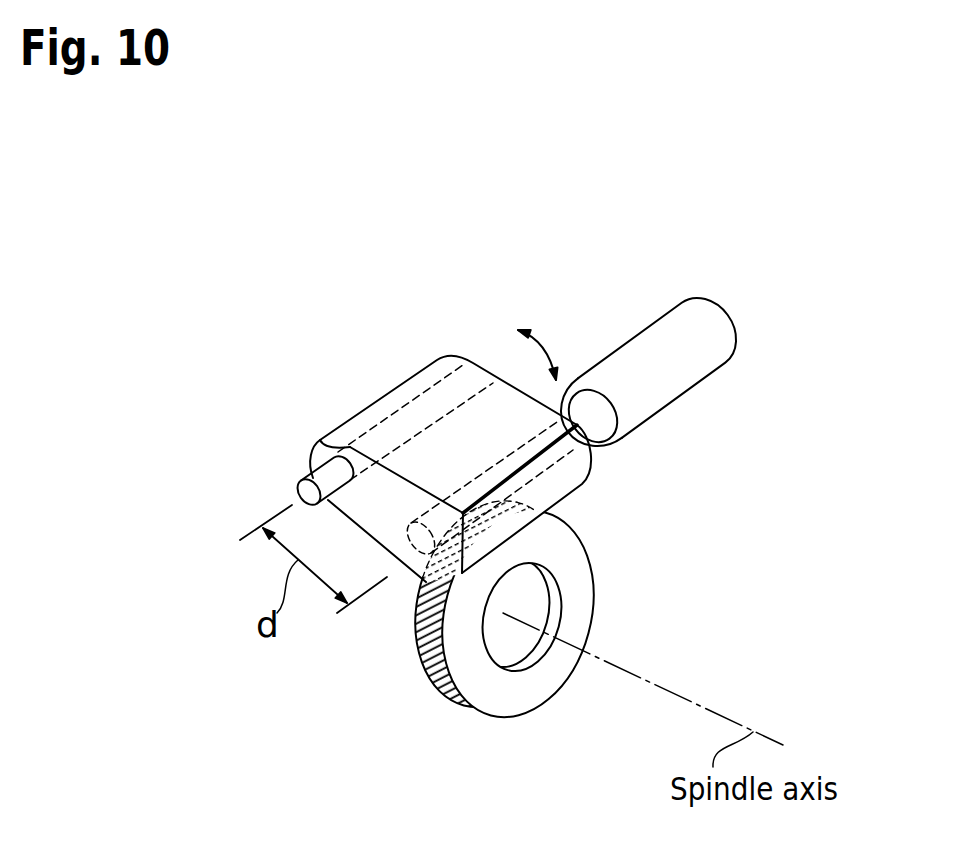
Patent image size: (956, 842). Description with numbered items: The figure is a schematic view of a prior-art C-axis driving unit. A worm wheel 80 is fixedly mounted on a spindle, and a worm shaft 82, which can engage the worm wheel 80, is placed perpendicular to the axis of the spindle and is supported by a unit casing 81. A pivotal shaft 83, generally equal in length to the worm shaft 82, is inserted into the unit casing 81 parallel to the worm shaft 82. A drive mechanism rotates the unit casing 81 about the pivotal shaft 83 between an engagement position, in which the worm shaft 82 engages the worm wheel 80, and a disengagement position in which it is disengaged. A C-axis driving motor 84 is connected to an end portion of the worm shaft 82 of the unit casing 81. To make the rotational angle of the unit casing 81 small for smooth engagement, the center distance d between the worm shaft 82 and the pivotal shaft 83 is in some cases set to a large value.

The worm wheel 80 is at (592, 600).
The unit casing 81 is at (418, 374).
The worm shaft 82 is at (572, 488).
The pivotal shaft 83 is at (373, 403).
The C-axis driving motor 84 is at (663, 307).